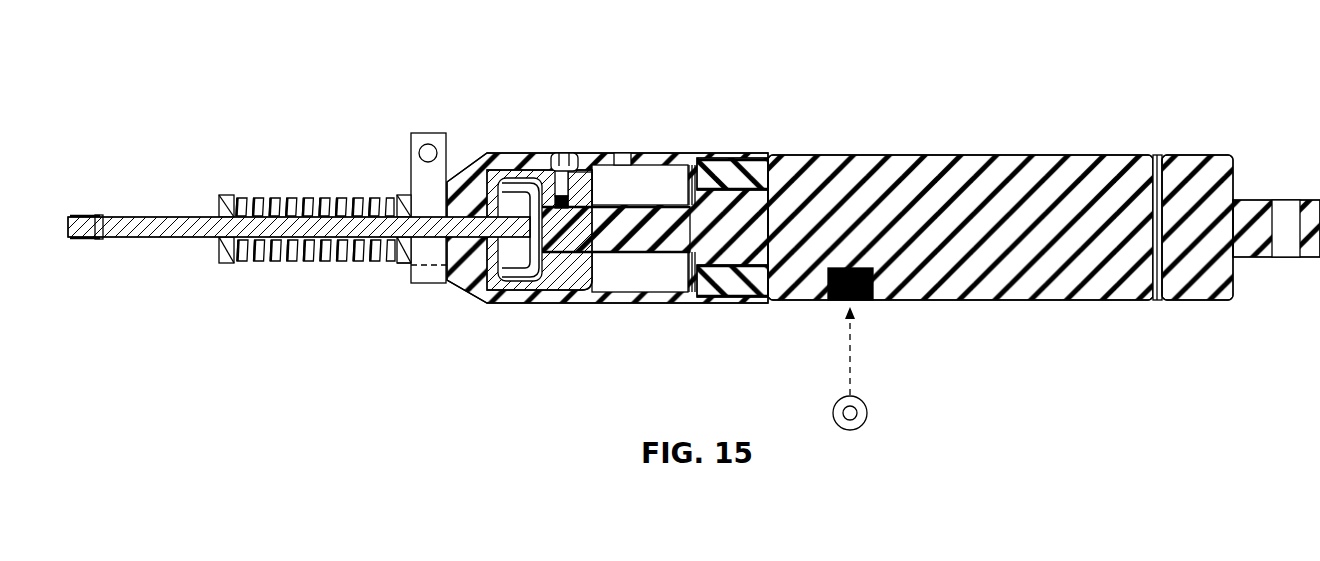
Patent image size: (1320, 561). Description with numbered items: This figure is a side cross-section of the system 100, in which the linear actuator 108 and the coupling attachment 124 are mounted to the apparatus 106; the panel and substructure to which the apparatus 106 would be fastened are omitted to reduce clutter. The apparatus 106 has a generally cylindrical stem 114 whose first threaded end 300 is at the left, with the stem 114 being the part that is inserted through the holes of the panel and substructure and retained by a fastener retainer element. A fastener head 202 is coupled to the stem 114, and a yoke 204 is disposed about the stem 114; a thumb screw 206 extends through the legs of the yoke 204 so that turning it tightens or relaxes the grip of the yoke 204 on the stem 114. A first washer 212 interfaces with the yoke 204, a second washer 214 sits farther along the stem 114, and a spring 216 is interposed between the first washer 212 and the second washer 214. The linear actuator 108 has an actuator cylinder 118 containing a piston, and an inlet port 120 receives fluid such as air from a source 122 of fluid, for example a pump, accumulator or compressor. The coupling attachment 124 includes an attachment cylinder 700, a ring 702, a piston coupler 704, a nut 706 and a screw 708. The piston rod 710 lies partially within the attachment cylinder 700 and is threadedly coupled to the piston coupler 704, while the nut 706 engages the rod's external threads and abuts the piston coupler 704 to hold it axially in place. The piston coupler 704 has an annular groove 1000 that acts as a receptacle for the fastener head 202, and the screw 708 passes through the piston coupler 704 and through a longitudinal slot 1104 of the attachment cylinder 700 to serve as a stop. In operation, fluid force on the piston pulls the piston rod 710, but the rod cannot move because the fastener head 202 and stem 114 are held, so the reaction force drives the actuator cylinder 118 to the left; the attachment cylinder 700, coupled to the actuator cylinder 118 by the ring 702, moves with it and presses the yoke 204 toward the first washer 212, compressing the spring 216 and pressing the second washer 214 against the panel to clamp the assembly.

The system 100 is at (183, 112).
The apparatus 106 is at (318, 187).
The linear actuator 108 is at (962, 152).
The stem 114 is at (166, 240).
The actuator cylinder 118 is at (1098, 295).
The inlet port 120 is at (838, 305).
The source of fluid 122 is at (868, 415).
The coupling attachment 124 is at (641, 138).
The fastener head 202 is at (497, 300).
The yoke 204 is at (428, 272).
The thumb screw 206 is at (436, 147).
The first washer 212 is at (405, 265).
The second washer 214 is at (228, 265).
The spring 216 is at (325, 265).
The first threaded end 300 is at (78, 245).
The attachment cylinder 700 is at (683, 158).
The ring 702 is at (762, 158).
The piston coupler 704 is at (600, 292).
The nut 706 is at (640, 285).
The screw 708 is at (560, 153).
The piston rod 710 is at (668, 160).
The annular groove 1000 is at (535, 275).
The longitudinal slot 1104 is at (603, 152).